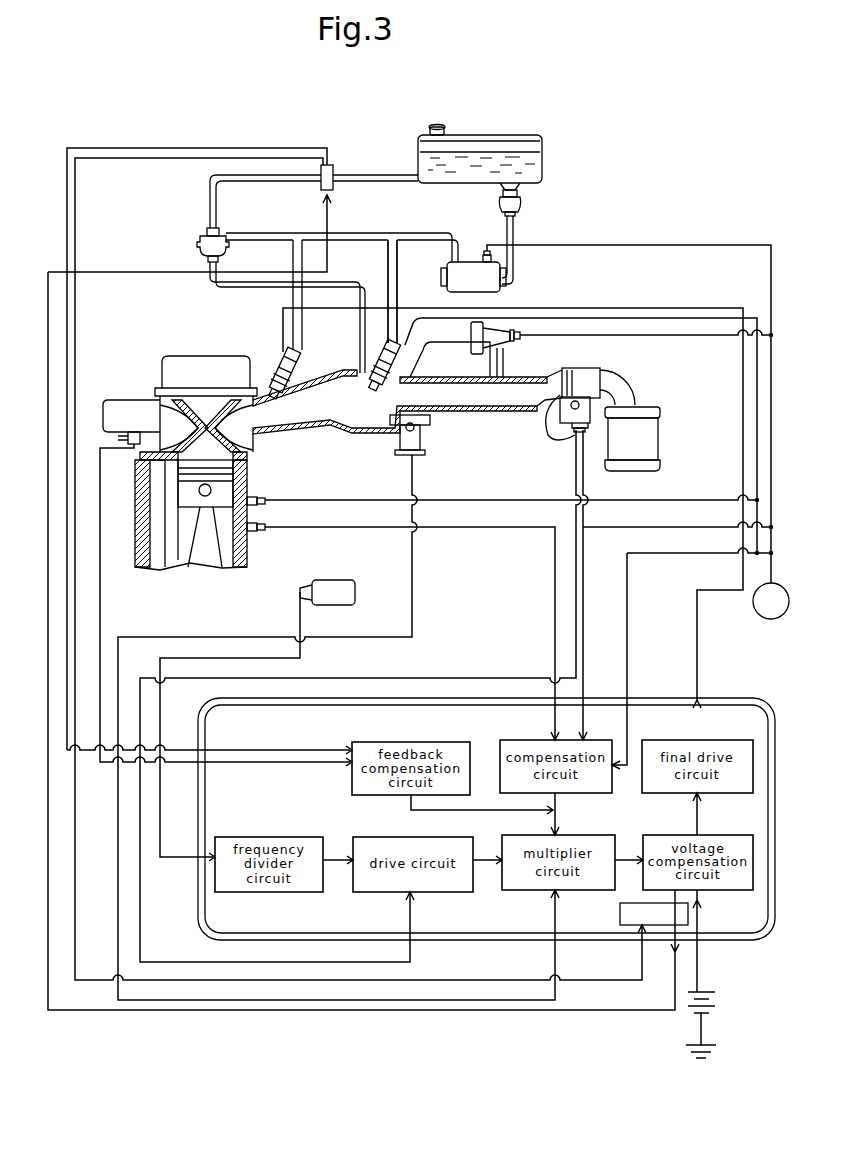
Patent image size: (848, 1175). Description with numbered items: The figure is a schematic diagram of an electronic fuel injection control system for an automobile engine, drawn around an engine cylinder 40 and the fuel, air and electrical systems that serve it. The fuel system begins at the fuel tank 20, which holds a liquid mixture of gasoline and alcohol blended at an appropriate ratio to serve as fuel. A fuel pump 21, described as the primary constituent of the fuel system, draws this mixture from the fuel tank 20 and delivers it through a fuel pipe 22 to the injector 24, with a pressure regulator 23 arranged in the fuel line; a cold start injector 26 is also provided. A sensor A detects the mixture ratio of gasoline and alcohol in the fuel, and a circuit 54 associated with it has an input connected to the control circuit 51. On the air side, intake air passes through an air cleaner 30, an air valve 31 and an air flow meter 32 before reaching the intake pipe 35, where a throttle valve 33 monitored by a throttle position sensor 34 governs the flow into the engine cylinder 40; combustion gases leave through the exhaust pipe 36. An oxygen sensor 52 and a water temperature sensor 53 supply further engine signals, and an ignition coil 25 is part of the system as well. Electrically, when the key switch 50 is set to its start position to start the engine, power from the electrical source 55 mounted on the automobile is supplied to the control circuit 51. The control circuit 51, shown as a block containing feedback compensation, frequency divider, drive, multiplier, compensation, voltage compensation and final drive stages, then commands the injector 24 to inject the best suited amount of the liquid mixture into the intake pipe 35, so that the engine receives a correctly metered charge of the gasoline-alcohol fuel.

The sensor A is at (347, 160).
The fuel tank 20 is at (541, 138).
The fuel pump 21 is at (504, 292).
The fuel pipe 22 is at (391, 243).
The pressure regulator 23 is at (203, 240).
The injector 24 is at (280, 352).
The ignition coil 25 is at (299, 592).
The cold start injector 26 is at (380, 352).
The air cleaner 30 is at (668, 446).
The air valve 31 is at (497, 336).
The air flow meter 32 is at (556, 427).
The throttle valve 33 is at (420, 392).
The throttle position sensor 34 is at (404, 447).
The intake pipe 35 is at (344, 430).
The exhaust pipe 36 is at (125, 406).
The engine cylinder 40 is at (152, 566).
The key switch 50 is at (775, 602).
The control circuit 51 is at (770, 712).
The oxygen sensor 52 is at (106, 424).
The water temperature sensor 53 is at (262, 531).
The circuit 54 is at (682, 912).
The electrical source 55 is at (703, 1002).